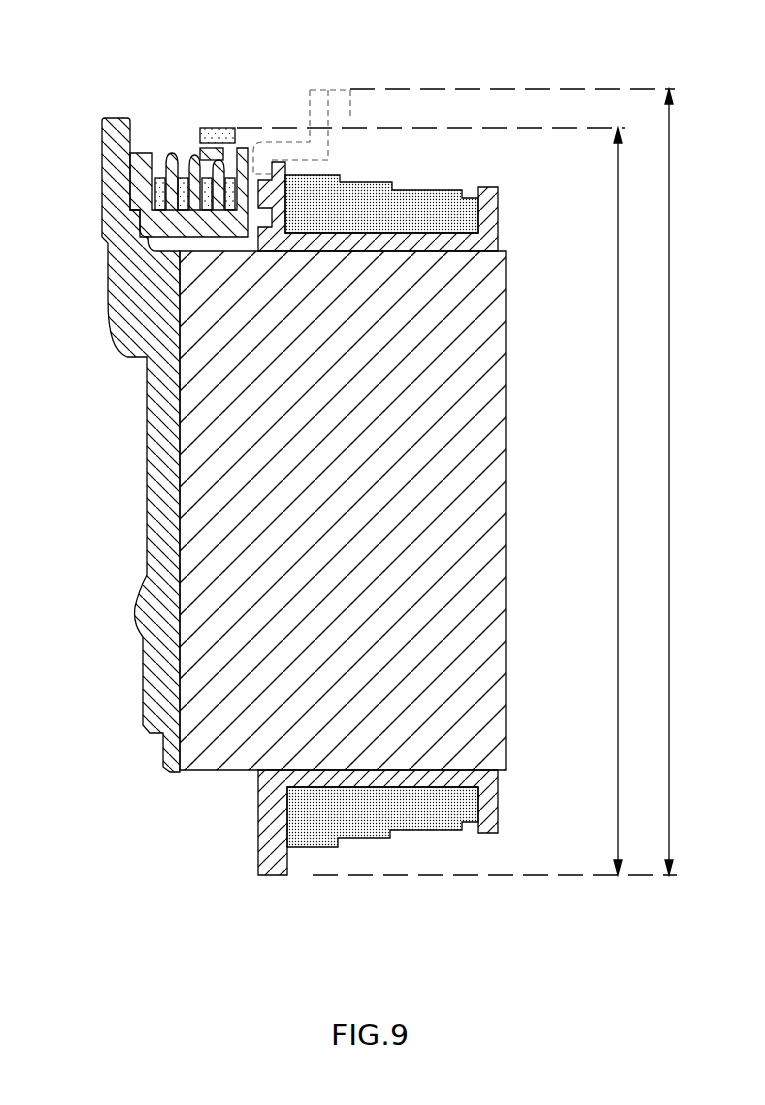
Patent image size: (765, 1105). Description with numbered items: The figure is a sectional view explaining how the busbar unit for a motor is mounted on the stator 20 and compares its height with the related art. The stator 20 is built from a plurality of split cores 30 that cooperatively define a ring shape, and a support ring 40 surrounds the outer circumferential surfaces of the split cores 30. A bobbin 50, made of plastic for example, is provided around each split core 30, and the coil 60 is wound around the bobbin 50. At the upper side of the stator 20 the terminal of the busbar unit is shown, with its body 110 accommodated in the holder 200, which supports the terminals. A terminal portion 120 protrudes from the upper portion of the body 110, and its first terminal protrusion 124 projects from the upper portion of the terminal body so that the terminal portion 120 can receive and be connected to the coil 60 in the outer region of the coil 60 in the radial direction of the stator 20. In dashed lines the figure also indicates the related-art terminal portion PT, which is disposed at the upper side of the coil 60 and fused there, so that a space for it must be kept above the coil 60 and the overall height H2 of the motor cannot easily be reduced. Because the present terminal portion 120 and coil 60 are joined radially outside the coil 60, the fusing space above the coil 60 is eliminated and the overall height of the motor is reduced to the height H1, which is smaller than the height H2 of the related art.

The stator 20 is at (522, 278).
The split core 30 is at (492, 602).
The support ring 40 is at (145, 618).
The bobbin 50 is at (492, 805).
The coil 60 is at (367, 825).
The body 110 is at (160, 188).
The terminal portion 120 is at (217, 112).
The first terminal protrusion 124 is at (203, 130).
The holder 200 is at (160, 210).
The terminal portion of the related art PT is at (352, 106).
The height H1 is at (630, 501).
The overall height H2 is at (683, 482).